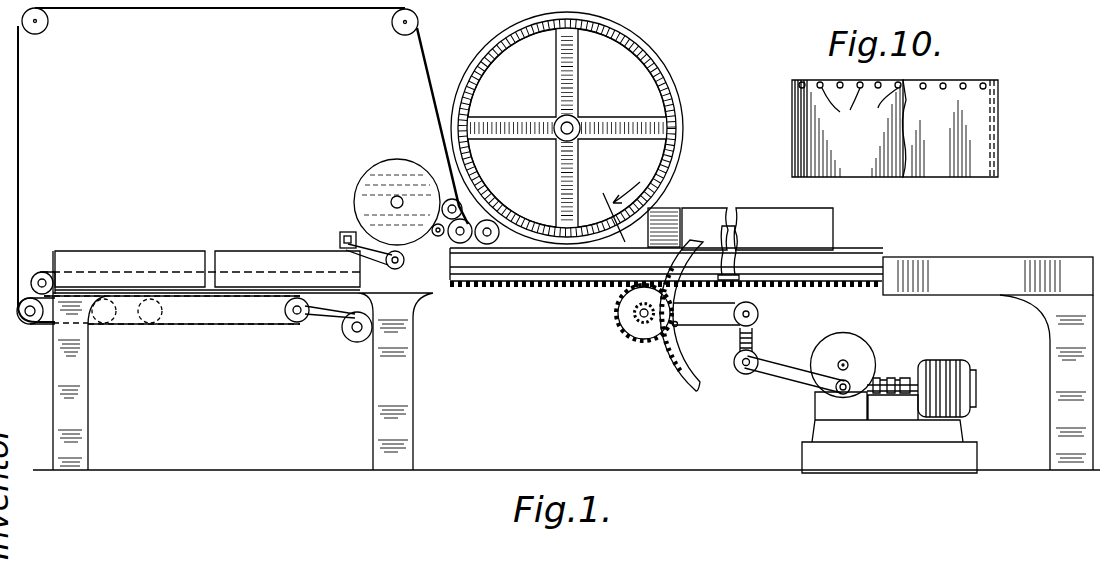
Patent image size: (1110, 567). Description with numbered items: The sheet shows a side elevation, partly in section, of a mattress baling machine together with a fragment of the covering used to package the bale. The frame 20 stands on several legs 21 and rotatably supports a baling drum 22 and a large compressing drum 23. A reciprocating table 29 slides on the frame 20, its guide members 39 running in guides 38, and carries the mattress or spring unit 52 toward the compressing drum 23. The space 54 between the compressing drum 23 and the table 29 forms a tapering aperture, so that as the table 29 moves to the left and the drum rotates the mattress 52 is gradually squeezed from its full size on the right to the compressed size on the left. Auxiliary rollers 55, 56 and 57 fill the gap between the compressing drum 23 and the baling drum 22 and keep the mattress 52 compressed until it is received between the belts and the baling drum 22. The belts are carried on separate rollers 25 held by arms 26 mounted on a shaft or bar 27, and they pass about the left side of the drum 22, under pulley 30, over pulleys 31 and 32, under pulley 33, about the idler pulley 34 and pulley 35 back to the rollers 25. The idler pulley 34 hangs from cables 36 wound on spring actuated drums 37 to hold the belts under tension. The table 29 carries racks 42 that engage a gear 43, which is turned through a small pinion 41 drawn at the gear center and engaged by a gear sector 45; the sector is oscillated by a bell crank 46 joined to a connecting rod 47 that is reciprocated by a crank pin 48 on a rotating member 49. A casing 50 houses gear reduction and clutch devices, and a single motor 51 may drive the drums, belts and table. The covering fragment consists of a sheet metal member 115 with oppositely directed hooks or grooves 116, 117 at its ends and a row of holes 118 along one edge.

In FIG. 1, the frame 20 is at (258, 282).
In FIG. 1, the legs 21 is at (90, 390).
In FIG. 1, the baling drum 22 is at (358, 188).
In FIG. 1, the compressing drum 23 is at (664, 78).
In FIG. 1, the rollers 25 is at (404, 266).
In FIG. 1, the arms 26 is at (345, 234).
In FIG. 1, the shaft or bar 27 is at (432, 88).
In FIG. 1, the reciprocating table 29 is at (577, 261).
In FIG. 1, the pulley 30 is at (447, 195).
In FIG. 1, the pulley 31 is at (392, 24).
In FIG. 1, the pulley 32 is at (50, 28).
In FIG. 1, the pulley 33 is at (62, 292).
In FIG. 1, the idler pulley 34 is at (295, 322).
In FIG. 1, the pulley 35 is at (40, 272).
In FIG. 1, the cables 36 is at (334, 318).
In FIG. 1, the spring actuated drums 37 is at (357, 342).
In FIG. 1, the guides 38 is at (882, 262).
In FIG. 1, the guide members 39 is at (840, 265).
In FIG. 1, the pinion 41 is at (641, 330).
In FIG. 1, the racks 42 is at (780, 292).
In FIG. 1, the gear 43 is at (616, 330).
In FIG. 1, the gear sector 45 is at (670, 372).
In FIG. 1, the bell crank 46 is at (728, 365).
In FIG. 1, the connecting rod 47 is at (782, 378).
In FIG. 1, the crank pin 48 is at (875, 378).
In FIG. 1, the rotating member 49 is at (846, 340).
In FIG. 1, the casing 50 is at (860, 398).
In FIG. 1, the motor 51 is at (944, 370).
In FIG. 1, the mattress or spring unit 52 is at (684, 215).
In FIG. 1, the space 54 is at (611, 206).
In FIG. 1, the auxiliary roller 55 is at (436, 237).
In FIG. 1, the auxiliary roller 56 is at (462, 222).
In FIG. 1, the auxiliary roller 57 is at (488, 222).
In FIG. 10, the sheet metal member 115 is at (958, 95).
In FIG. 10, the hook or groove 116 is at (1000, 112).
In FIG. 10, the hook or groove 117 is at (792, 104).
In FIG. 10, the holes 118 is at (860, 107).